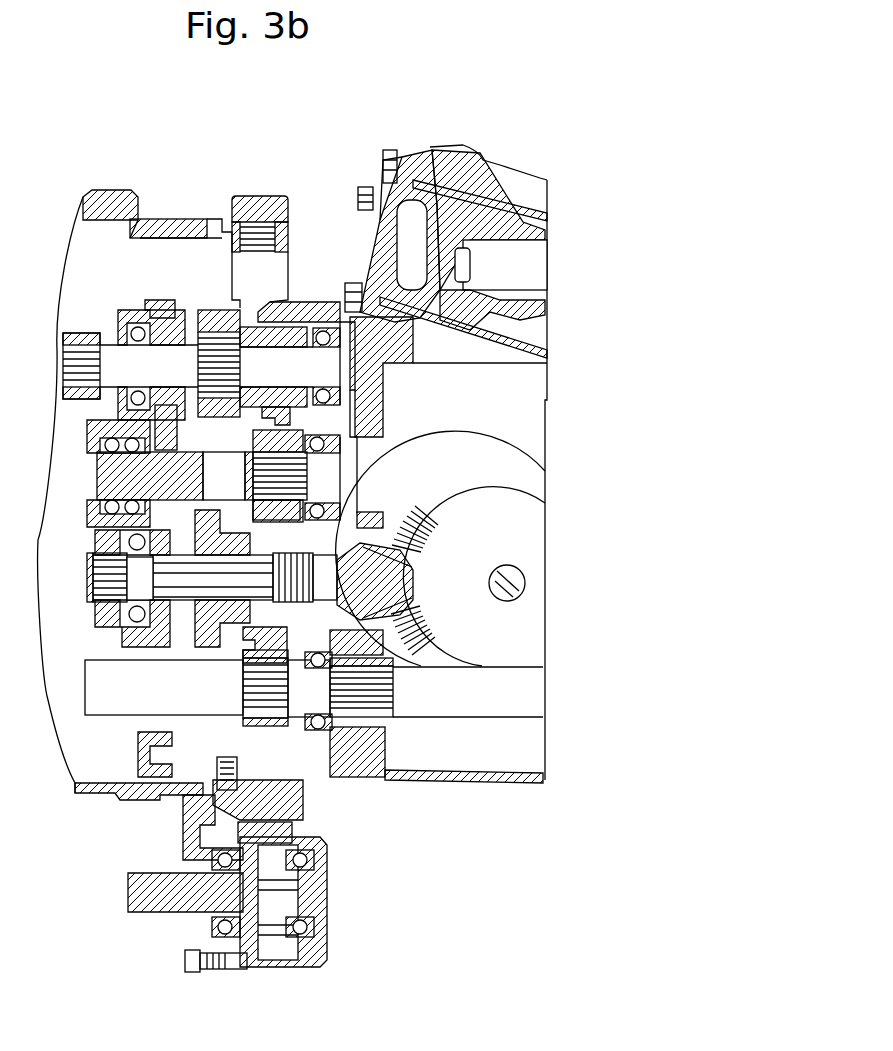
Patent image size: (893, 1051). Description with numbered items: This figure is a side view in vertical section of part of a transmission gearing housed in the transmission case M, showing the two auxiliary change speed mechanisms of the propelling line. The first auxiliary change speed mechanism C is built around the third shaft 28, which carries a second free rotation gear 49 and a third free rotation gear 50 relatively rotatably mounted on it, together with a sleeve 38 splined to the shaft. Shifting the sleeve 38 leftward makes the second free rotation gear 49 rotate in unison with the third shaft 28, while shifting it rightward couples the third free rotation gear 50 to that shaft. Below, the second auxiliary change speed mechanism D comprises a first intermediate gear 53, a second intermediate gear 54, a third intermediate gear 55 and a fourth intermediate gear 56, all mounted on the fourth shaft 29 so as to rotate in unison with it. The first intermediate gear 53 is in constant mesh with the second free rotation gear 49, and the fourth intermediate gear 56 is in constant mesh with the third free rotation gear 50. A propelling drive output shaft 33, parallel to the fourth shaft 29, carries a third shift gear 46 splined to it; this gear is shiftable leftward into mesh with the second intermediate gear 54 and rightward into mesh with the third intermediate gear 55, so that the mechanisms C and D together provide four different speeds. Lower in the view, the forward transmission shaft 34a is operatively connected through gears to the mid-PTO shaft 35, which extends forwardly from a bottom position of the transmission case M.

The first auxiliary change speed mechanism C is at (216, 259).
The second free rotation gear 49 is at (162, 307).
The sleeve 38 is at (215, 307).
The third shaft 28 is at (112, 342).
The third free rotation gear 50 is at (300, 327).
The first intermediate gear 53 is at (170, 393).
The third intermediate gear 55 is at (270, 393).
The fourth intermediate gear 56 is at (372, 420).
The fourth shaft 29 is at (353, 475).
The second intermediate gear 54 is at (202, 440).
The propelling drive output shaft 33 is at (87, 578).
The second auxiliary change speed mechanism D is at (172, 616).
The third shift gear 46 is at (203, 660).
The forward transmission shaft 34a is at (105, 707).
The transmission case M is at (77, 783).
The mid-PTO shaft 35 is at (155, 917).